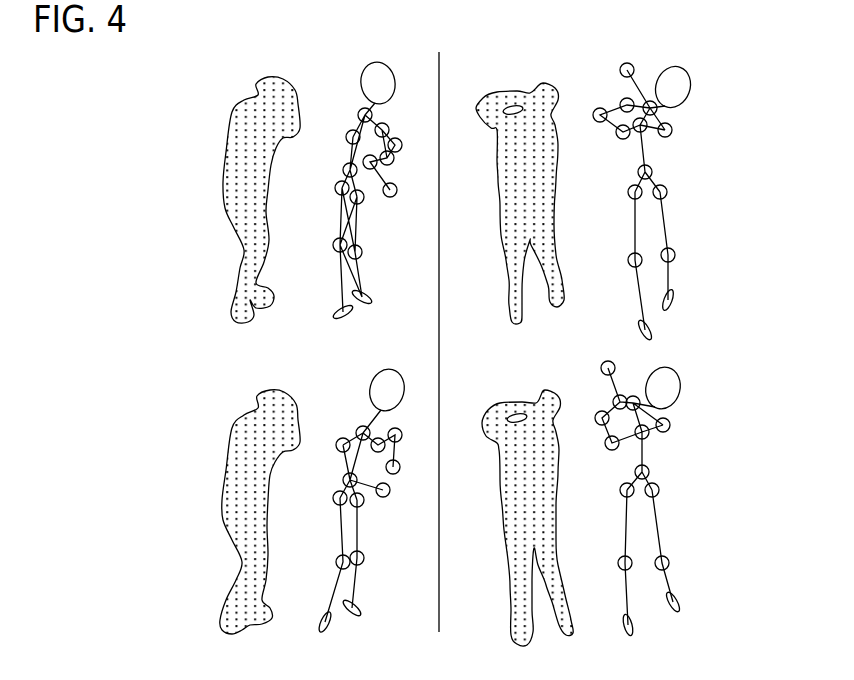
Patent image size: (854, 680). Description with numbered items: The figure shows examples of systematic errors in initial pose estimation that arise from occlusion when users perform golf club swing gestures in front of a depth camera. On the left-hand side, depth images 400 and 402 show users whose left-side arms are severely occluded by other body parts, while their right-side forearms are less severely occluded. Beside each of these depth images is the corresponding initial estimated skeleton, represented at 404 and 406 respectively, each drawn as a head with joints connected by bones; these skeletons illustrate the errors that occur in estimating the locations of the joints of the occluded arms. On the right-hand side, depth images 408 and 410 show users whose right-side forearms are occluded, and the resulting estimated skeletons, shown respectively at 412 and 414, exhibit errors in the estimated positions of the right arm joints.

The depth image 400 is at (270, 75).
The depth image 402 is at (270, 387).
The initial estimated skeleton 404 is at (378, 62).
The initial estimated skeleton 406 is at (385, 370).
The depth image 408 is at (545, 82).
The depth image 410 is at (545, 389).
The estimated skeleton 412 is at (672, 65).
The estimated skeleton 414 is at (680, 372).